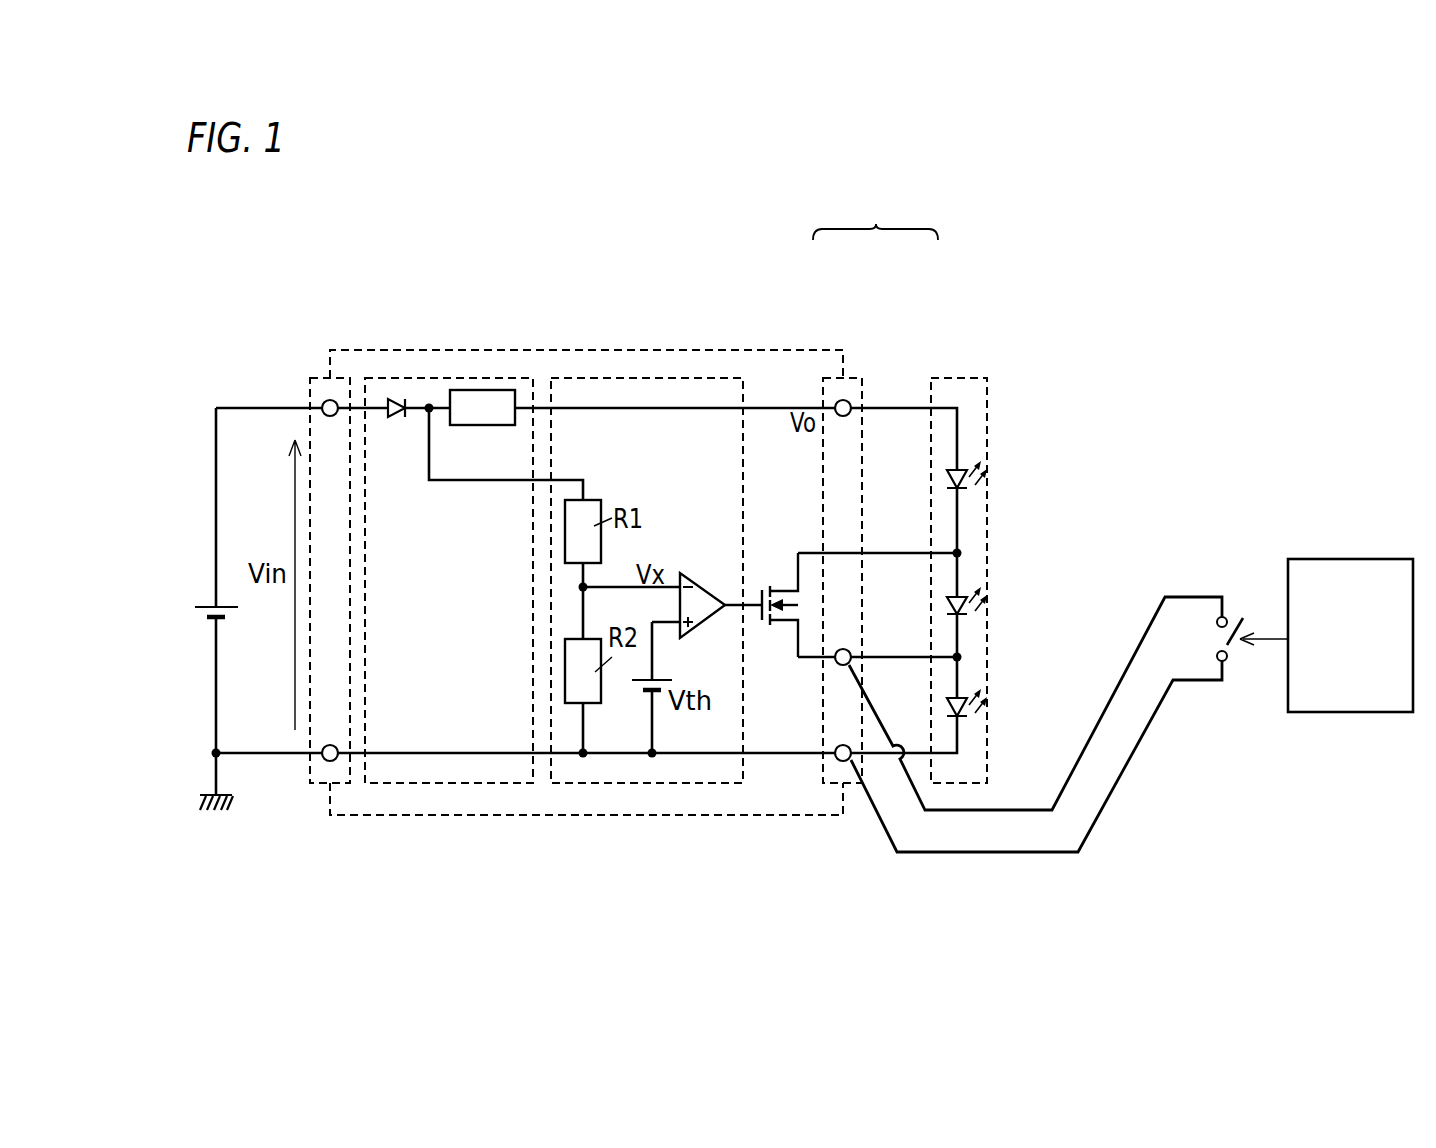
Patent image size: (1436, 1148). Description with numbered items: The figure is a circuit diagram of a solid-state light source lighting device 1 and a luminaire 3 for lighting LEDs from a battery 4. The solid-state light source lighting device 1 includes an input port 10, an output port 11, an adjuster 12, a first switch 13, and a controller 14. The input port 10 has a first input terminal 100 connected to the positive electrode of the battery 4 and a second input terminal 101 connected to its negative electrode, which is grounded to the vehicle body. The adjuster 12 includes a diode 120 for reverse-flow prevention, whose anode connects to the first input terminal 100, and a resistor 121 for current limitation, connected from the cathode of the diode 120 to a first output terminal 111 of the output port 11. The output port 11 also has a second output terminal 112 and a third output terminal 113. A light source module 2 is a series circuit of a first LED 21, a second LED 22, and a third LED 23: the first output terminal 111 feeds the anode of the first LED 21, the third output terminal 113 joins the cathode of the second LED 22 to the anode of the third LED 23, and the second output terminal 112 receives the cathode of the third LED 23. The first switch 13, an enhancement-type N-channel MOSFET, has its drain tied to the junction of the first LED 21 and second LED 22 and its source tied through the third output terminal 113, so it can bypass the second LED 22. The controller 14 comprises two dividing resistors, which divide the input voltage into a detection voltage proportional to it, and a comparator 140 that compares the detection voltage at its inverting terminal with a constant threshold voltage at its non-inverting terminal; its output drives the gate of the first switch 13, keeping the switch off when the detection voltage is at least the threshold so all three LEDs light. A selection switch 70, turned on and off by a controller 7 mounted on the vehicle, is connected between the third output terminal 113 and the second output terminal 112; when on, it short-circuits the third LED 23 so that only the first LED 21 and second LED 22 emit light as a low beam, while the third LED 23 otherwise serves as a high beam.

The solid-state light source lighting device 1 is at (786, 349).
The light source module 2 is at (952, 377).
The luminaire 3 is at (886, 222).
The battery 4 is at (203, 618).
The controller 7 is at (1362, 570).
The input port 10 is at (316, 377).
The output port 11 is at (858, 377).
The adjuster 12 is at (447, 786).
The first switch 13 is at (775, 583).
The controller 14 is at (625, 786).
The first LED 21 is at (968, 488).
The second LED 22 is at (968, 614).
The third LED 23 is at (968, 716).
The selection switch 70 is at (1235, 653).
The first input terminal 100 is at (323, 402).
The second input terminal 101 is at (323, 760).
The first output terminal 111 is at (835, 402).
The second output terminal 112 is at (834, 760).
The third output terminal 113 is at (834, 661).
The diode 120 is at (398, 420).
The resistor 121 is at (483, 420).
The comparator 140 is at (703, 600).